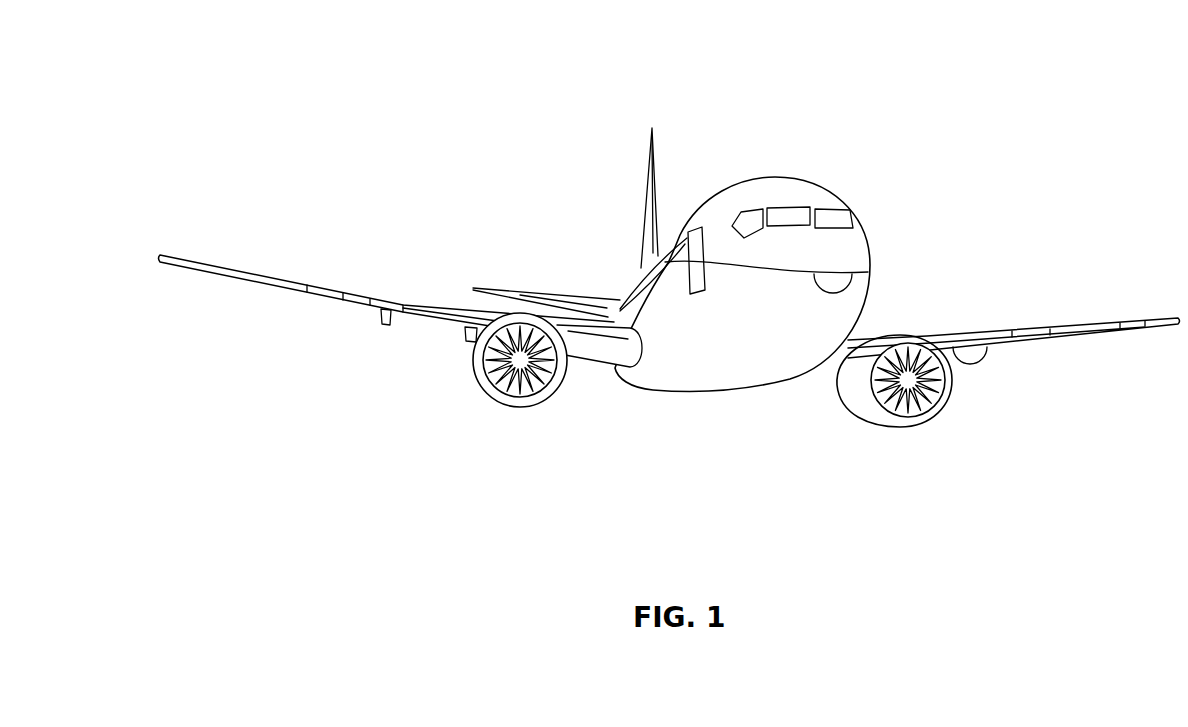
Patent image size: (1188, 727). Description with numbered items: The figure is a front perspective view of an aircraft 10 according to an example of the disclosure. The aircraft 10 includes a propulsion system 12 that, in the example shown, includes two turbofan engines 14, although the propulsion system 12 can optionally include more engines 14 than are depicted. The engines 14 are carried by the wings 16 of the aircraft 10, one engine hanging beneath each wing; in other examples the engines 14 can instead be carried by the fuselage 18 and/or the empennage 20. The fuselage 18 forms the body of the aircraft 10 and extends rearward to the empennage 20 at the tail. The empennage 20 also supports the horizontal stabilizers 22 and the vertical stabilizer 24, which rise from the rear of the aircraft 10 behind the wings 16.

The aircraft 10 is at (414, 72).
The propulsion system 12 is at (998, 419).
The turbofan engines 14 is at (513, 408).
The wings 16 is at (295, 283).
The fuselage 18 is at (867, 240).
The empennage 20 is at (640, 272).
The horizontal stabilizers 22 is at (510, 288).
The vertical stabilizer 24 is at (648, 177).